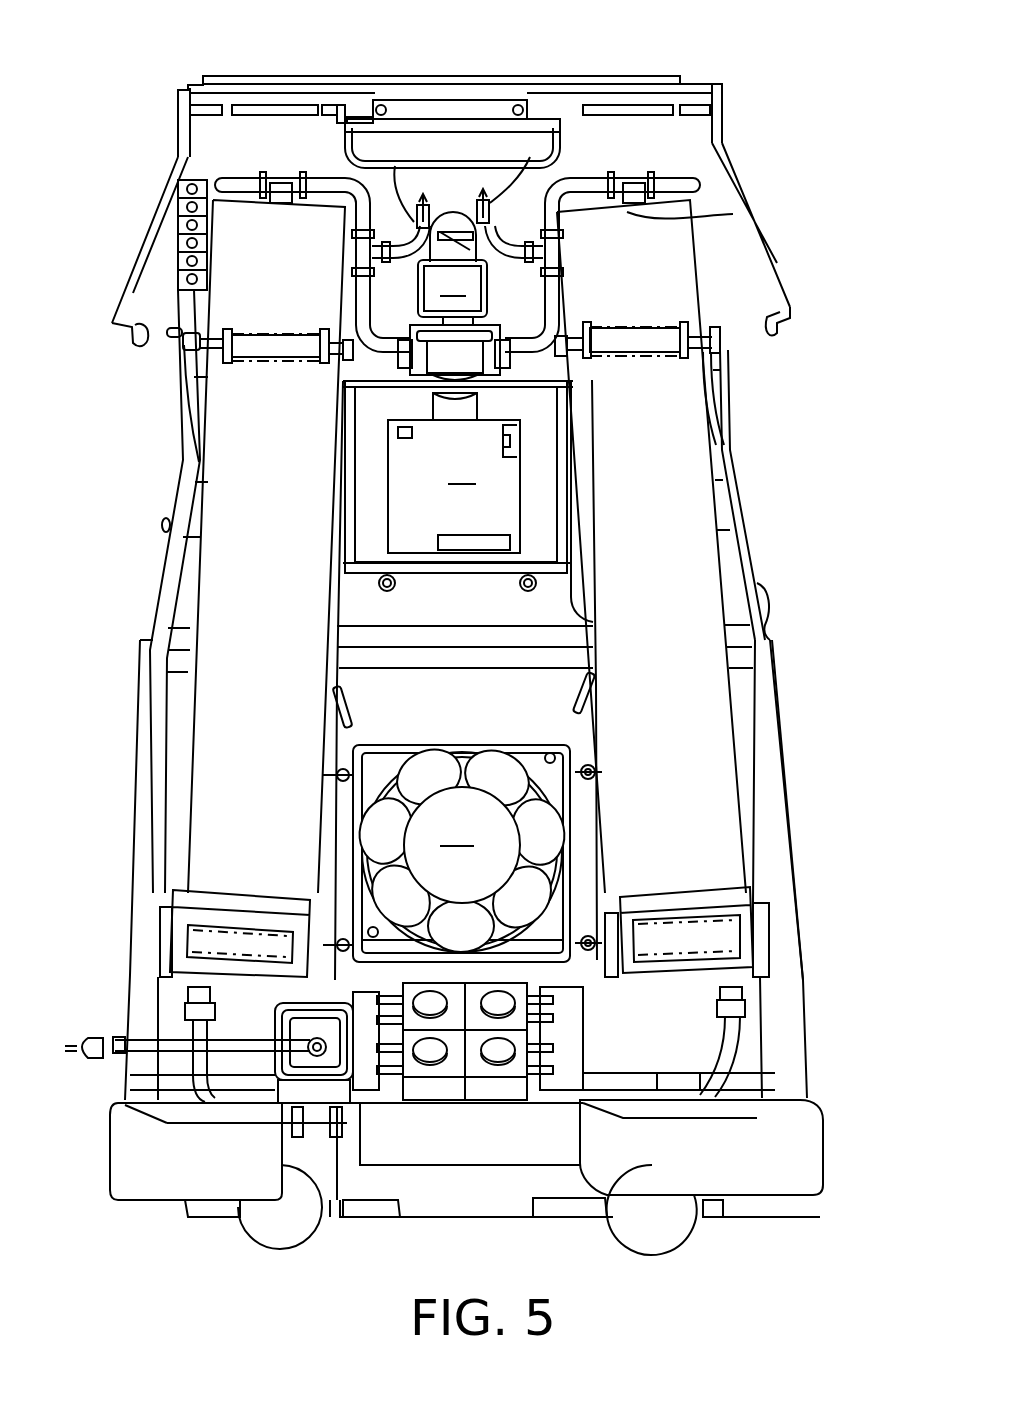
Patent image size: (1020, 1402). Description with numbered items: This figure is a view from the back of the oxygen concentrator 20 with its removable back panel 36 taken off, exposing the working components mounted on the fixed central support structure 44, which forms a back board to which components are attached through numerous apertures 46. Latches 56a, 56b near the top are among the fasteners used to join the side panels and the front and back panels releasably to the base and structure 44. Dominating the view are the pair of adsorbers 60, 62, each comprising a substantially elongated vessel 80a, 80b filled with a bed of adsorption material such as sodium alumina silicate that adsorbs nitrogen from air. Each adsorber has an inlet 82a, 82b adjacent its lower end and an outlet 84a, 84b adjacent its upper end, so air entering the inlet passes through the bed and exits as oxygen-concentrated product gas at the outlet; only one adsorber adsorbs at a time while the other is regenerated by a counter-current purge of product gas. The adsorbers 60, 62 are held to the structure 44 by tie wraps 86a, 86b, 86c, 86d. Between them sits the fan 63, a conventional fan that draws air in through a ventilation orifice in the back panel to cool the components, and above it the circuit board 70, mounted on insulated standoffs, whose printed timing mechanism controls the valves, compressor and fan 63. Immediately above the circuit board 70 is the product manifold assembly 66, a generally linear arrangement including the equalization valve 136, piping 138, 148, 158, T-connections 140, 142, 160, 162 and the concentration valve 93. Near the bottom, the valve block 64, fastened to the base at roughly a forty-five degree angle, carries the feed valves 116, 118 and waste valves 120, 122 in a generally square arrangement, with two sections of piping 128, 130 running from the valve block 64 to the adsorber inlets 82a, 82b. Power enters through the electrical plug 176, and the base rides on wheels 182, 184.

The oxygen concentrator 20 is at (147, 81).
The back panel 36 is at (778, 270).
The central support structure 44 is at (712, 184).
The apertures 46 is at (325, 178).
The latch 56a is at (387, 105).
The latch 56b is at (520, 102).
The adsorber 60 is at (200, 735).
The adsorber 62 is at (725, 835).
The fan 63 is at (462, 850).
The valve block 64 is at (455, 1092).
The product manifold assembly 66 is at (452, 264).
The circuit board 70 is at (454, 486).
The vessel 80a is at (723, 778).
The vessel 80b is at (195, 820).
The inlet 82a is at (745, 988).
The inlet 82b is at (190, 985).
The outlet 84a is at (718, 215).
The outlet 84b is at (184, 175).
The tie wrap 86a is at (745, 895).
The tie wrap 86b is at (172, 897).
The tie wrap 86c is at (176, 348).
The tie wrap 86d is at (725, 340).
The concentration valve 93 is at (448, 198).
The feed valve 116 is at (517, 1023).
The feed valve 118 is at (422, 1022).
The waste valve 120 is at (503, 1068).
The waste valve 122 is at (437, 1070).
The piping 128 is at (725, 1035).
The piping 130 is at (164, 1123).
The equalization valve 136 is at (470, 368).
The piping 138 is at (360, 127).
The T-connection 140 is at (622, 180).
The T-connection 142 is at (283, 183).
The piping 148 is at (214, 192).
The piping 158 is at (408, 172).
The T-connection 160 is at (563, 250).
The T-connection 162 is at (352, 252).
The electrical plug 176 is at (88, 1052).
The wheel 182 is at (685, 1245).
The wheel 184 is at (305, 1245).